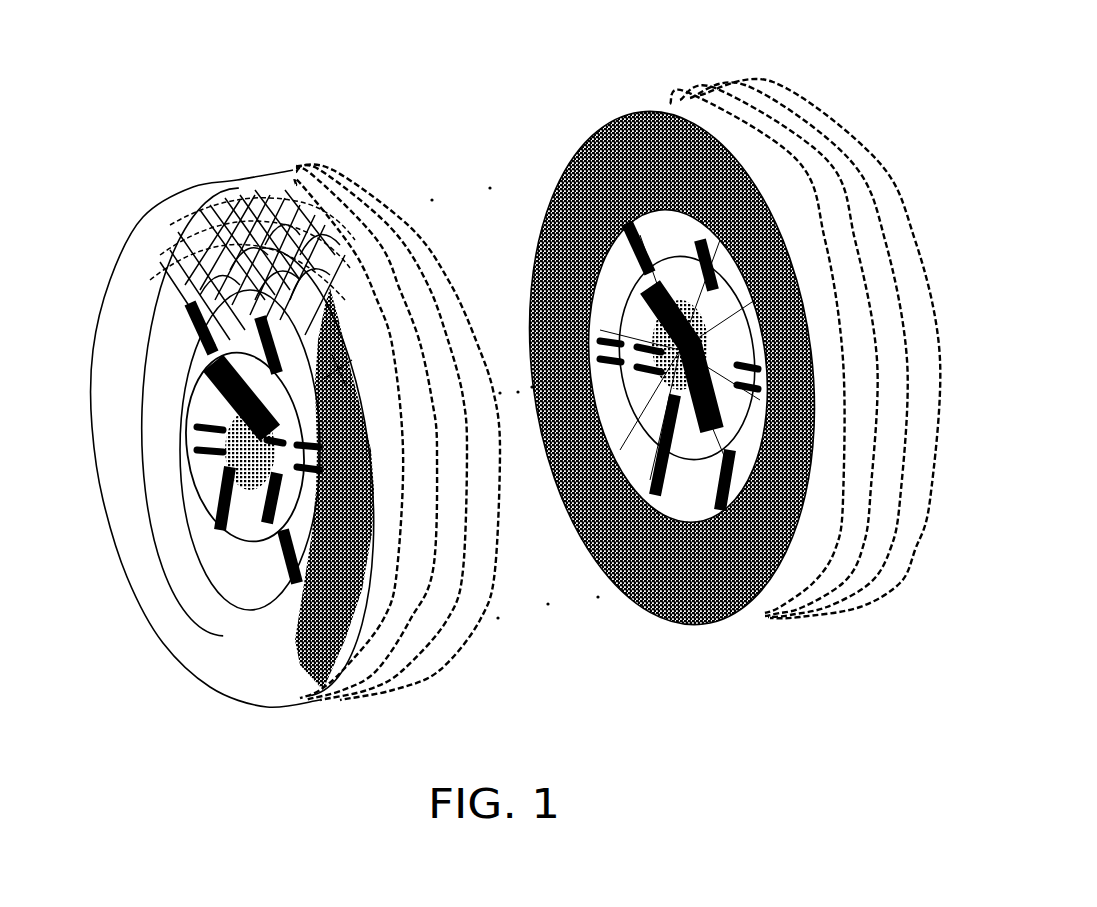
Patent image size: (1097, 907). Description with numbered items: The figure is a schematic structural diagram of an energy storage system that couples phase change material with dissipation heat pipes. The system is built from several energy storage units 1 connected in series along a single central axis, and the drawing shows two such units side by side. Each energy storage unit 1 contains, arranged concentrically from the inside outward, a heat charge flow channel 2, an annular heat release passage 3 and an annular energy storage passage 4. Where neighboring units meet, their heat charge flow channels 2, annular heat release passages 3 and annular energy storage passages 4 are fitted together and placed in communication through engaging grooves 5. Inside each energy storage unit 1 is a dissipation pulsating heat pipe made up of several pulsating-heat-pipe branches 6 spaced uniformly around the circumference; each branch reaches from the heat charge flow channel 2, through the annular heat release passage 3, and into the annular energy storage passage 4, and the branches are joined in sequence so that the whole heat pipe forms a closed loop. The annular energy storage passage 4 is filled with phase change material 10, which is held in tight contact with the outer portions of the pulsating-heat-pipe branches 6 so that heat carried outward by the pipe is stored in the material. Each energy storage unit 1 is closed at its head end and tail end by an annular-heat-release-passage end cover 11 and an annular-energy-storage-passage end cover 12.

The energy storage unit 1 is at (233, 190).
The heat charge flow channel 2 is at (640, 337).
The annular heat release passage 3 is at (675, 515).
The annular energy storage passage 4 is at (210, 243).
The engaging groove 5 is at (828, 540).
The pulsating-heat-pipe branch 6 is at (197, 310).
The phase change material 10 is at (597, 168).
The annular-heat-release-passage end cover 11 is at (180, 475).
The annular-energy-storage-passage end cover 12 is at (207, 628).